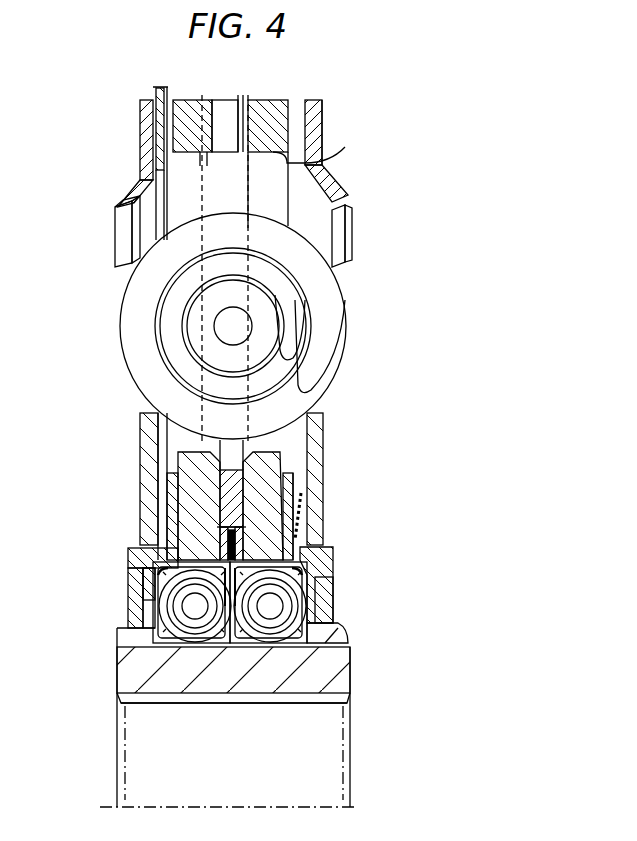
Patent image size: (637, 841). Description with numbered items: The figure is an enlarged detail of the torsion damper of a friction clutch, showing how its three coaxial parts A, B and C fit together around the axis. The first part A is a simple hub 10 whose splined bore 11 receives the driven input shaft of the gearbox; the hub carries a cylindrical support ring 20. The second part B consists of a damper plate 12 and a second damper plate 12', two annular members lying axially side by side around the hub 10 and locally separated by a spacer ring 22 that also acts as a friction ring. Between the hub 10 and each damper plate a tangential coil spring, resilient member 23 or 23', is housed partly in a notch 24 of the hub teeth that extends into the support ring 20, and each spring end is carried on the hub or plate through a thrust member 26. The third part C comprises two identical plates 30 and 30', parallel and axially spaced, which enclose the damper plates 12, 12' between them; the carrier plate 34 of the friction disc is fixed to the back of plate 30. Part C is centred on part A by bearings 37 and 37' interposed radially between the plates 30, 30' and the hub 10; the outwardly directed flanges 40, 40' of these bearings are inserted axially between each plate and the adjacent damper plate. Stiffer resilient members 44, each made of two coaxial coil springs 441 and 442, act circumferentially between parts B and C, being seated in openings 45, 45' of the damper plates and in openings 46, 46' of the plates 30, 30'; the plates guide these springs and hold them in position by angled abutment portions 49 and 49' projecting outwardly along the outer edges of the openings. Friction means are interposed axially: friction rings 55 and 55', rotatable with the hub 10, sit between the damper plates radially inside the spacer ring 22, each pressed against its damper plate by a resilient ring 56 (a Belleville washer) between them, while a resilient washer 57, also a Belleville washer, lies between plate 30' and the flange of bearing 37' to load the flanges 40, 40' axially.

The hub 10 is at (112, 673).
The bore 11 is at (190, 706).
The damper plate 12 is at (194, 108).
The second damper plate 12' is at (274, 139).
The cylindrical support ring 20 is at (333, 612).
The spacer ring 22 is at (233, 470).
The resilient member 23 is at (155, 602).
The resilient member 23' is at (268, 647).
The notch 24 is at (333, 635).
The thrust member 26 is at (140, 635).
The plate 30 is at (116, 144).
The plate 30' is at (334, 126).
The carrier plate 34 is at (163, 522).
The bearing 37 is at (115, 581).
The bearing 37' is at (353, 585).
The second flange 40 is at (134, 508).
The second flange 40' is at (323, 505).
The resilient member 44 is at (118, 318).
The coil spring 441 is at (133, 298).
The coil spring 442 is at (297, 330).
The opening 45 is at (177, 163).
The opening 45' is at (319, 142).
The opening 46 is at (120, 471).
The opening 46' is at (347, 471).
The abutment portion 49 is at (107, 214).
The abutment portion 49' is at (363, 212).
The friction ring 55 is at (199, 506).
The friction ring 55' is at (263, 506).
The resilient ring 56 is at (238, 542).
The resilient washer 57 is at (300, 503).
The first part A is at (100, 733).
The second part B is at (228, 97).
The third part C is at (333, 127).